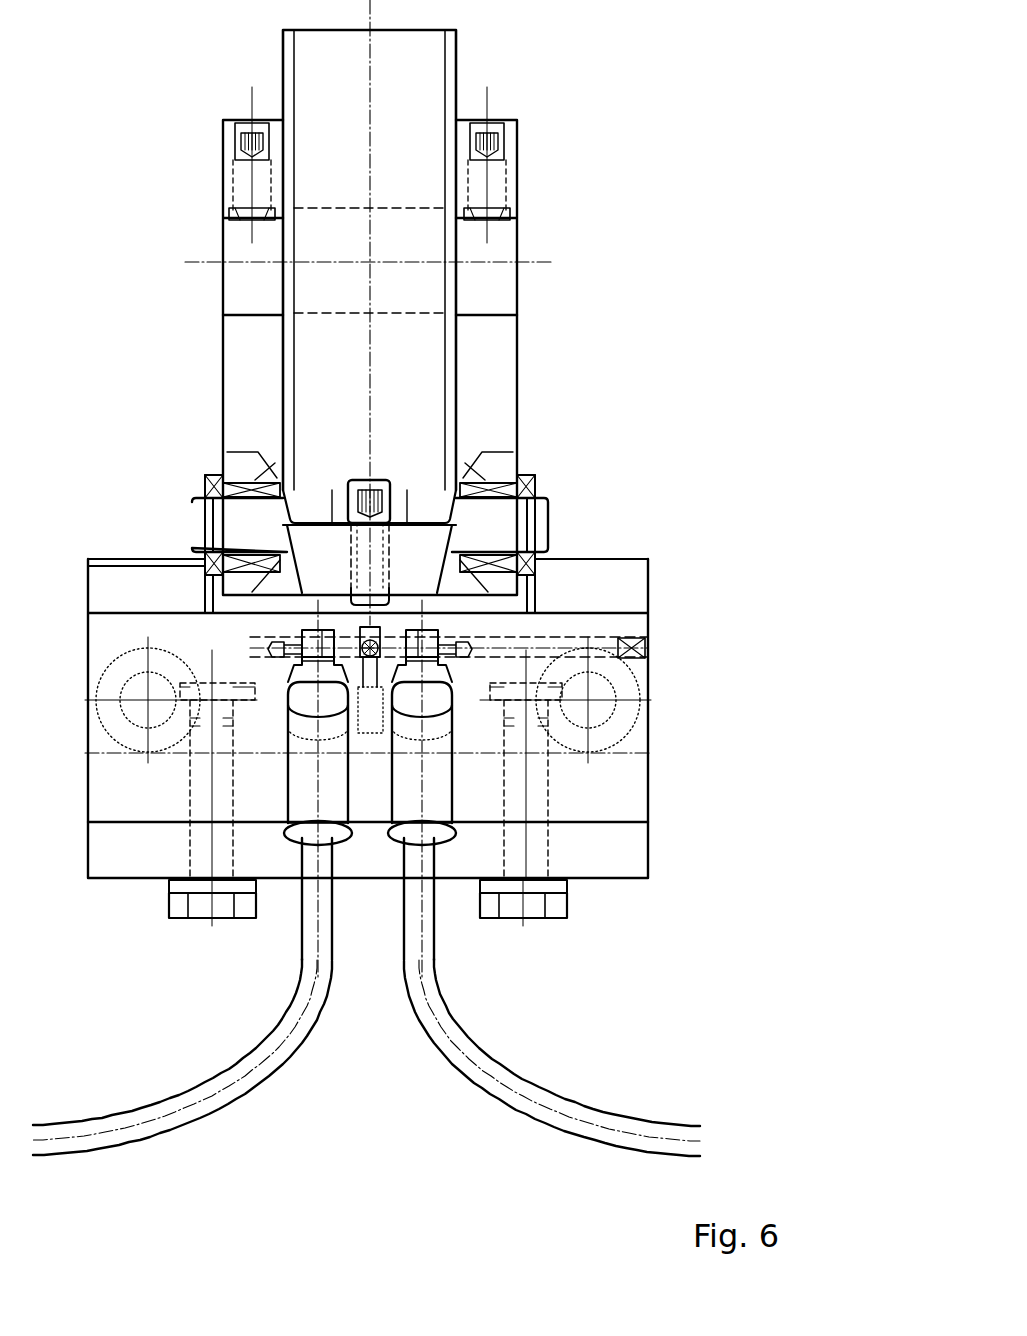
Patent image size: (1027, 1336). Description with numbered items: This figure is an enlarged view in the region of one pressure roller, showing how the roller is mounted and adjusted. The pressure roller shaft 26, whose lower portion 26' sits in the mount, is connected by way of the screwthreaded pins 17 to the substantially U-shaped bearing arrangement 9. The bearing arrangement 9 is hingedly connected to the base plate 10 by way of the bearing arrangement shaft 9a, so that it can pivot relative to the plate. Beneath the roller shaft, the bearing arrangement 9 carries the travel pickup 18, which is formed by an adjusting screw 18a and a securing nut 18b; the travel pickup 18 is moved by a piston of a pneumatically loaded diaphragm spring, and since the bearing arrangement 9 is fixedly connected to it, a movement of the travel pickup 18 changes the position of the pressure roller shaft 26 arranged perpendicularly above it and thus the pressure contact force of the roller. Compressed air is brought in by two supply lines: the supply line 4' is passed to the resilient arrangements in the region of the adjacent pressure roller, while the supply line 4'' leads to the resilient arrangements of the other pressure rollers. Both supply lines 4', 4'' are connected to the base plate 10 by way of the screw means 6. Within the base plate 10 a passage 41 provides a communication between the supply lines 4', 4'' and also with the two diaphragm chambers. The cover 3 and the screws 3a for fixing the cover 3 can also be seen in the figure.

The pressure roller shaft 26 is at (450, 260).
The pressure roller shaft 26' is at (300, 217).
The screwthreaded pins 17 is at (248, 170).
The bearing arrangement 9 is at (488, 382).
The bearing arrangement shaft 9a is at (190, 510).
The adjusting screw 18a is at (397, 502).
The travel pickup 18 is at (387, 546).
The securing nut 18b is at (377, 565).
The base plate 10 is at (633, 624).
The passage 41 is at (540, 653).
The screw means 6 is at (330, 783).
The cover 3 is at (632, 850).
The screws 3a is at (553, 905).
The supply line 4'' is at (182, 1020).
The supply line 4' is at (552, 1026).